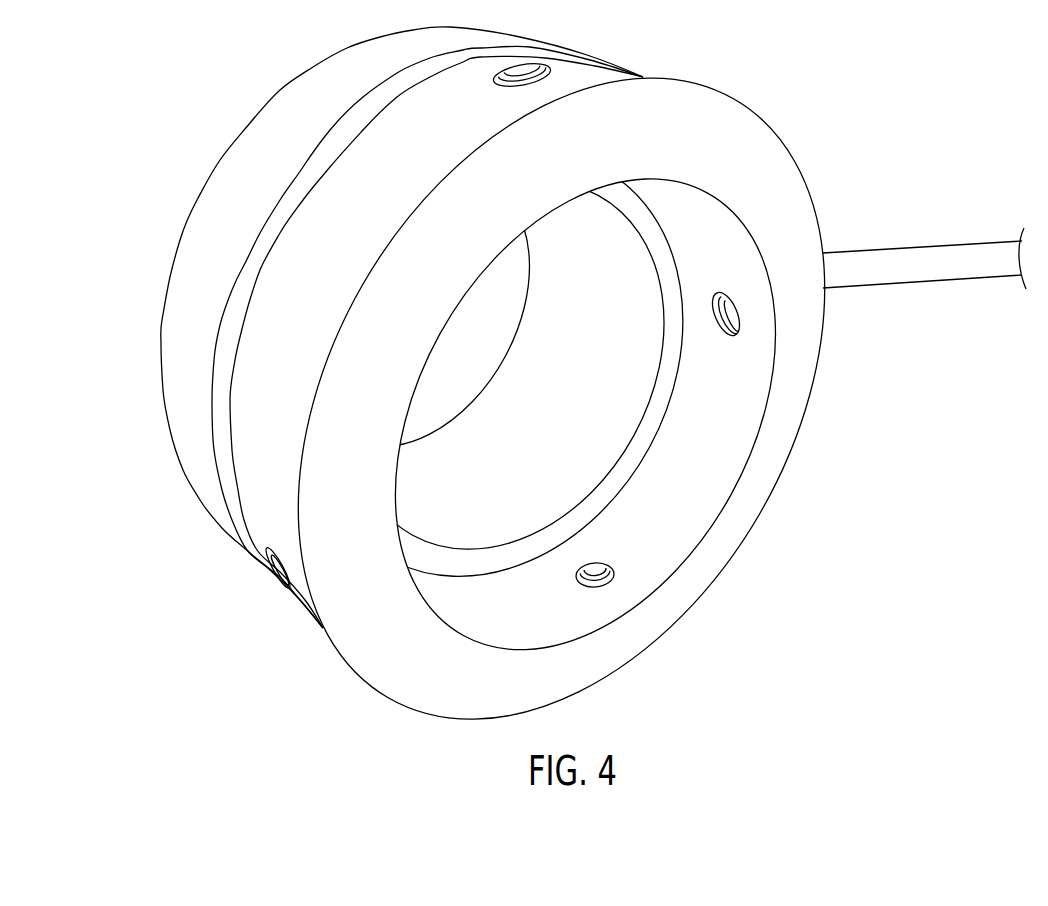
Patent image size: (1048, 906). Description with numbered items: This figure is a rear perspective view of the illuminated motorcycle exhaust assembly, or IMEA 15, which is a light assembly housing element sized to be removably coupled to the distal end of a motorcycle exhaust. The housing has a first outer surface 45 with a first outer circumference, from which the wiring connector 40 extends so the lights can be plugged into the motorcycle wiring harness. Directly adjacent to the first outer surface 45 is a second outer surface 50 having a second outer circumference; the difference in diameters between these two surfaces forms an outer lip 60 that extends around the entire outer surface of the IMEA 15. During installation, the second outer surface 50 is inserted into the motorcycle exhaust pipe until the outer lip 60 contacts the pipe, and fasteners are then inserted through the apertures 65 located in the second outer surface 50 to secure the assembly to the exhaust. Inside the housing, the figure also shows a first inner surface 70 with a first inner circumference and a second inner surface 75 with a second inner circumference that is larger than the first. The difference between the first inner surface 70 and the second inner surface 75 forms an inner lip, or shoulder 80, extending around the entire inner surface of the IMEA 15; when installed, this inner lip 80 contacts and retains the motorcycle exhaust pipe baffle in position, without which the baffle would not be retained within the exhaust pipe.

The IMEA 15 is at (866, 422).
The wiring connector 40 is at (935, 260).
The first outer surface 45 is at (237, 224).
The second outer surface 50 is at (377, 211).
The outer lip 60 is at (237, 510).
The apertures 65 is at (523, 83).
The first inner surface 70 is at (539, 447).
The second inner surface 75 is at (530, 614).
The inner lip 80 is at (665, 286).